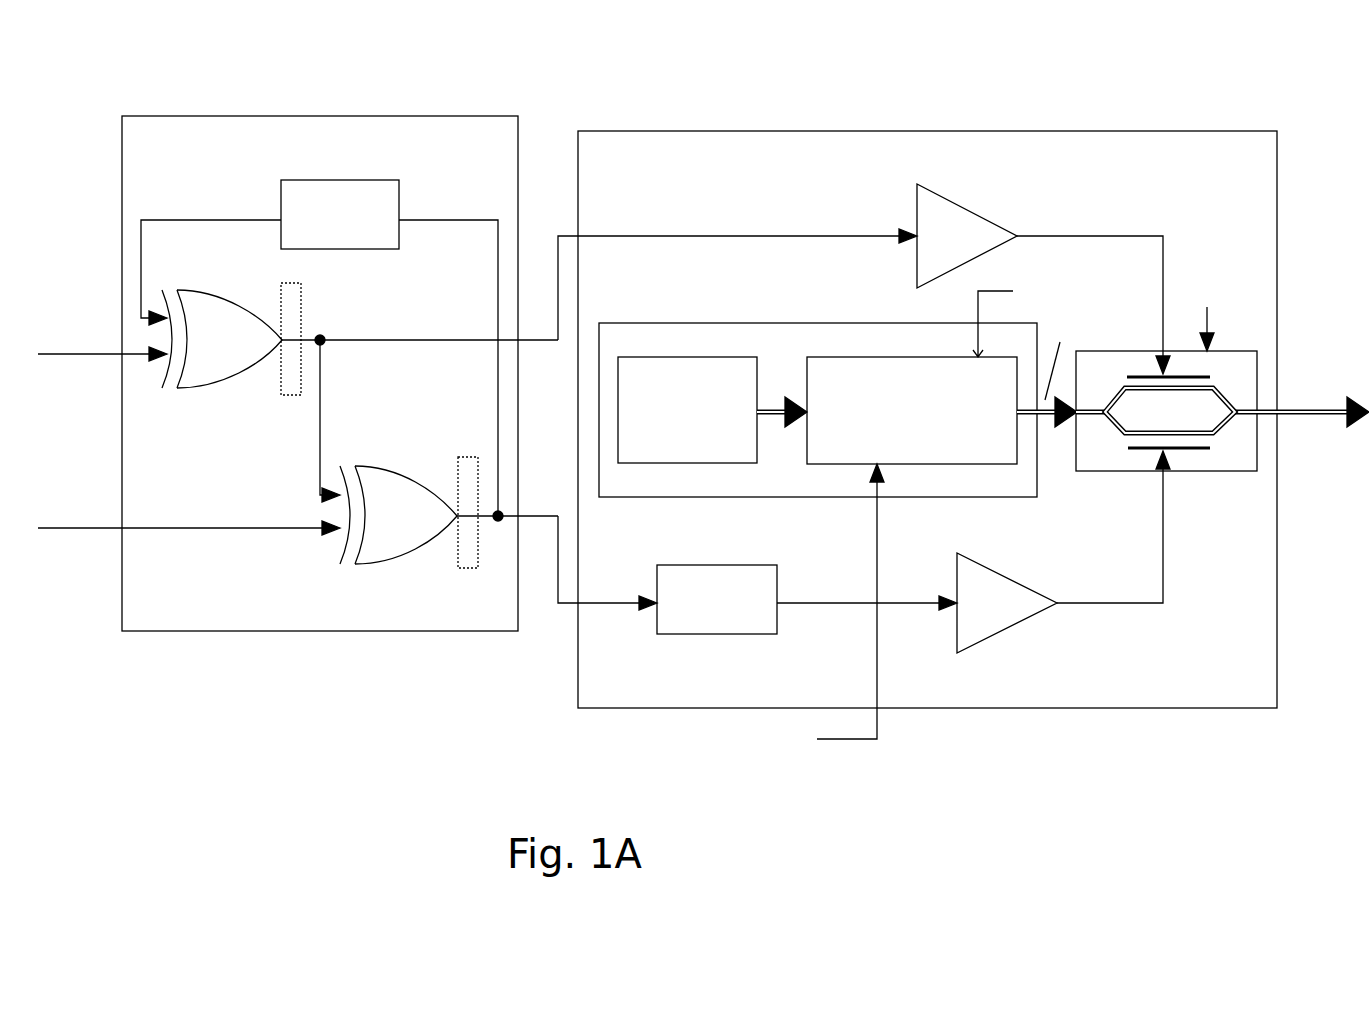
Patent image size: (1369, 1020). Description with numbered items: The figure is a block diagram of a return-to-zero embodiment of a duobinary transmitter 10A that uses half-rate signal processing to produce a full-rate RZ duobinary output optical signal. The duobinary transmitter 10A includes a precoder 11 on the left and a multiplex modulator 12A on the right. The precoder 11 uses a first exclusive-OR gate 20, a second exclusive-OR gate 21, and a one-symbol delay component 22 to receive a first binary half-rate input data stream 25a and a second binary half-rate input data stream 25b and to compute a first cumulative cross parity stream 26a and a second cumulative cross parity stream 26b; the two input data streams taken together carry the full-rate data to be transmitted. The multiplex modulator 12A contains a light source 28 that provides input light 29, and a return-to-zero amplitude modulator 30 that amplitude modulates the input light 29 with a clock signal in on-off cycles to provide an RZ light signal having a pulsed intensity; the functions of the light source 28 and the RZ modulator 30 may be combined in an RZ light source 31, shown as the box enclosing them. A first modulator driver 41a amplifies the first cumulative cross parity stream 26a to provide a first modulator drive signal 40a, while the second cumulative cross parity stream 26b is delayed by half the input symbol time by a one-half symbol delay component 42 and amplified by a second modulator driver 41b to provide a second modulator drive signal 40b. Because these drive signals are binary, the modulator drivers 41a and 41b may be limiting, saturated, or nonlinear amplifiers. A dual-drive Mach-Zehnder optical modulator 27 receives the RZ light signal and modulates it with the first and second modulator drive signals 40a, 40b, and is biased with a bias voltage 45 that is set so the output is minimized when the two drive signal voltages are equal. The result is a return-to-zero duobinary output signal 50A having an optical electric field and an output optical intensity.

The duobinary transmitter 10A is at (879, 73).
The precoder 11 is at (497, 115).
The multiplex modulator 12A is at (655, 130).
The first exclusive-OR gate 20 is at (212, 382).
The second exclusive-OR gate 21 is at (412, 547).
The one-symbol delay component 22 is at (297, 179).
The first binary half-rate input data stream 25a is at (62, 358).
The second binary half-rate input data stream 25b is at (62, 532).
The first cumulative cross parity stream 26a is at (570, 233).
The second cumulative cross parity stream 26b is at (565, 607).
The dual-drive Mach-Zehnder optical modulator 27 is at (1215, 473).
The light source 28 is at (657, 356).
The input light 29 is at (768, 398).
The return-to-zero amplitude modulator 30 is at (868, 357).
The RZ light source 31 is at (722, 323).
The first modulator drive signal 40a is at (1165, 255).
The second modulator drive signal 40b is at (1165, 552).
The first modulator driver 41a is at (963, 203).
The second modulator driver 41b is at (1010, 628).
The one-half symbol delay component 42 is at (705, 634).
The bias voltage 45 is at (1212, 323).
The return-to-zero duobinary output signal 50A is at (1308, 400).